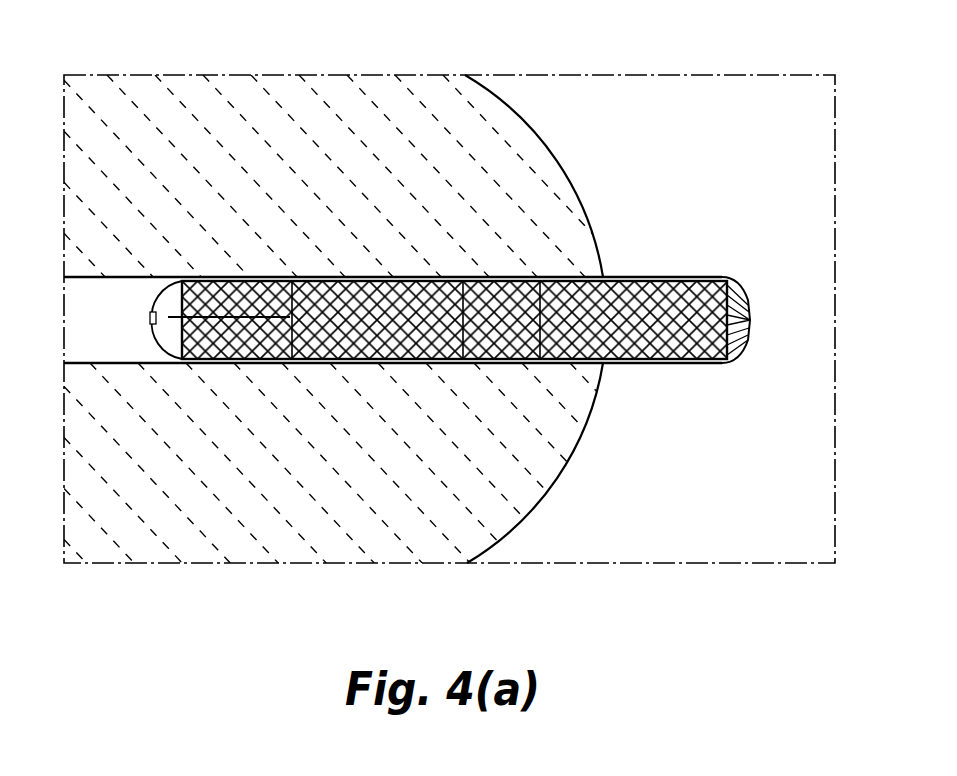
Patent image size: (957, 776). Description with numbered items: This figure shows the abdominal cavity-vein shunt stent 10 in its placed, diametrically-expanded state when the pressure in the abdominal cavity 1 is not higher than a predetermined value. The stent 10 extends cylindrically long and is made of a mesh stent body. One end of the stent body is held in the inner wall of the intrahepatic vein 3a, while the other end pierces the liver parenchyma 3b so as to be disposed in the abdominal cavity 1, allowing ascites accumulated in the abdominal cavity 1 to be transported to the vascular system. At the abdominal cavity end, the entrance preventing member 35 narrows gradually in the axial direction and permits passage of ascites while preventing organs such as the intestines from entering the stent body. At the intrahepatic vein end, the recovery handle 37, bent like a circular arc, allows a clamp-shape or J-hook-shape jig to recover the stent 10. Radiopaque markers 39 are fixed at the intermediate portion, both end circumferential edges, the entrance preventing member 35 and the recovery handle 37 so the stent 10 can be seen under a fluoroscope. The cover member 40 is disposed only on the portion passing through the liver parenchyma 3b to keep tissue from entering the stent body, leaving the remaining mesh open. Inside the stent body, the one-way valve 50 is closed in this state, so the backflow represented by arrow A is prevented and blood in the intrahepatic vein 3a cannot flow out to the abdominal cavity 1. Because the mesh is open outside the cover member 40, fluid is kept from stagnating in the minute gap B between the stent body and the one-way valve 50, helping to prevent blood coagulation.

The abdominal cavity 1 is at (768, 503).
The intrahepatic vein 3a is at (218, 363).
The liver parenchyma 3b is at (340, 100).
The abdominal cavity-vein shunt stent 10 is at (441, 374).
The entrance preventing member 35 is at (748, 305).
The recovery handle 37 is at (170, 282).
The markers 39 is at (151, 318).
The cover member 40 is at (567, 360).
The one-way valve 50 is at (307, 345).
The arrow A is at (168, 345).
The minute gap B is at (333, 277).